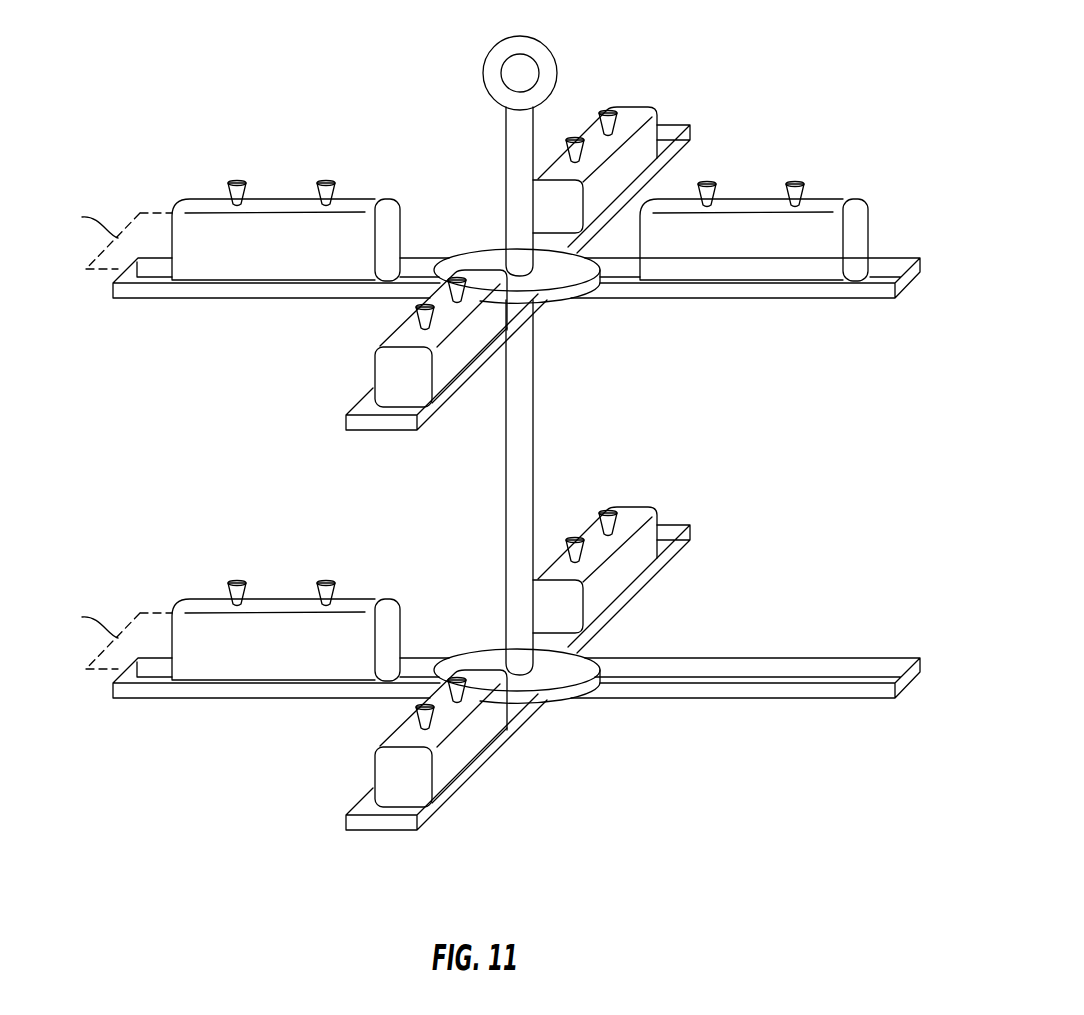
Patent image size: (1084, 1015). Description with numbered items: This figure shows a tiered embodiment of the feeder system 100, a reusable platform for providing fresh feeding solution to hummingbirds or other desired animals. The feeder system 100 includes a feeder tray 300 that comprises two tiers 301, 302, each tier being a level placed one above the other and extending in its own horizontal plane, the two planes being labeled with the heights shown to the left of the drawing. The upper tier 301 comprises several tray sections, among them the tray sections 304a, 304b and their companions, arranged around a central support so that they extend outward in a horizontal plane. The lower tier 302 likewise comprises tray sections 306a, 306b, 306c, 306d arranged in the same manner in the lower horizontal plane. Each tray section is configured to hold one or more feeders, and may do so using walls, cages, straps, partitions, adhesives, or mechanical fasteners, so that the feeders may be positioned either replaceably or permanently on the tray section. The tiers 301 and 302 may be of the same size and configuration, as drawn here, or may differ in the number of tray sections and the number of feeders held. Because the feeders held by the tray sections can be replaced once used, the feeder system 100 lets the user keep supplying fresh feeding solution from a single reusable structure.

The feeder system 100 is at (876, 54).
The feeder tray 300 is at (806, 166).
The tier 301 is at (925, 293).
The tier 302 is at (925, 693).
The tray section 304a is at (688, 298).
The tray section 304b is at (675, 128).
The tray section 306a is at (652, 700).
The tray section 306b is at (676, 558).
The tray section 306c is at (118, 700).
The tray section 306d is at (357, 832).